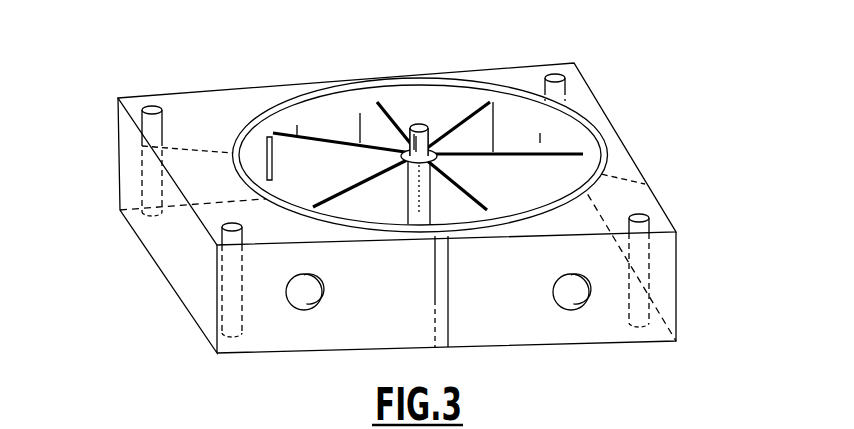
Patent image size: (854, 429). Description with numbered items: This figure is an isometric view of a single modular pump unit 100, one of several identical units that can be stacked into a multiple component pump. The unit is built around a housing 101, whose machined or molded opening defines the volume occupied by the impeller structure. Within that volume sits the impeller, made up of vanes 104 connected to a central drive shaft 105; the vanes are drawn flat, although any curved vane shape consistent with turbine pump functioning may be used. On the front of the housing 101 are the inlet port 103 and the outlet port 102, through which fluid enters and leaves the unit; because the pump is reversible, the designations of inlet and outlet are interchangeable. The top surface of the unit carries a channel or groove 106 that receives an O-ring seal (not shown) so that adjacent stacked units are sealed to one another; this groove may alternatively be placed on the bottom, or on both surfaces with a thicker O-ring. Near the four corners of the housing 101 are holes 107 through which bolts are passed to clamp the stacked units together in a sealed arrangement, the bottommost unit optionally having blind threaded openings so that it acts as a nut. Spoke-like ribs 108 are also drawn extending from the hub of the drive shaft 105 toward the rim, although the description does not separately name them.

The modular pump unit 100 is at (693, 95).
The housing 101 is at (676, 300).
The outlet port 102 is at (324, 284).
The inlet port 103 is at (553, 292).
The vanes 104 is at (402, 130).
The central drive shaft 105 is at (433, 122).
The channel or groove 106 is at (266, 128).
The holes 107 is at (152, 104).
The spokes 108 is at (333, 132).